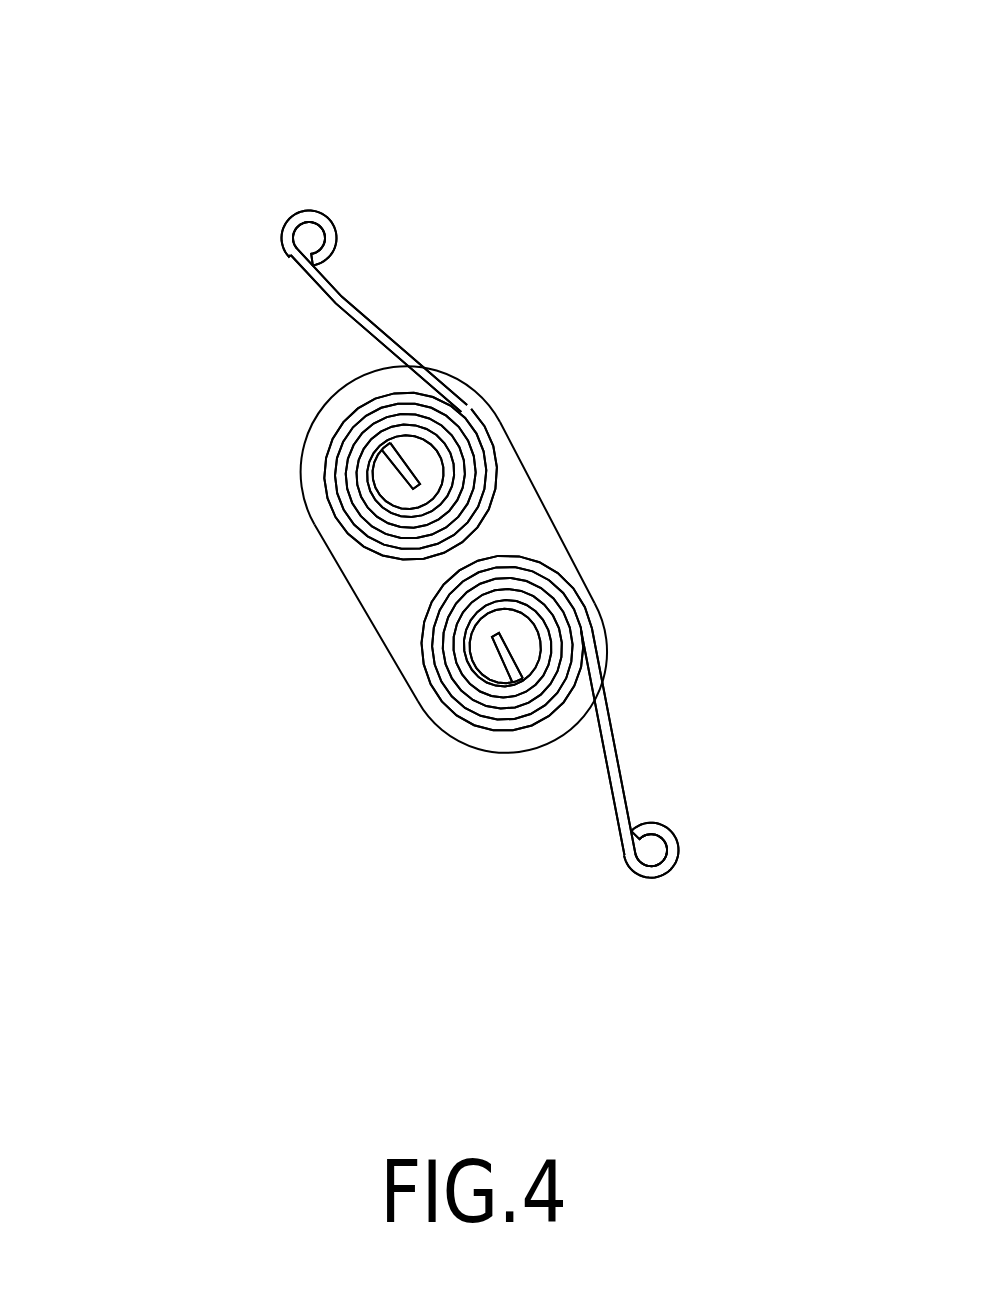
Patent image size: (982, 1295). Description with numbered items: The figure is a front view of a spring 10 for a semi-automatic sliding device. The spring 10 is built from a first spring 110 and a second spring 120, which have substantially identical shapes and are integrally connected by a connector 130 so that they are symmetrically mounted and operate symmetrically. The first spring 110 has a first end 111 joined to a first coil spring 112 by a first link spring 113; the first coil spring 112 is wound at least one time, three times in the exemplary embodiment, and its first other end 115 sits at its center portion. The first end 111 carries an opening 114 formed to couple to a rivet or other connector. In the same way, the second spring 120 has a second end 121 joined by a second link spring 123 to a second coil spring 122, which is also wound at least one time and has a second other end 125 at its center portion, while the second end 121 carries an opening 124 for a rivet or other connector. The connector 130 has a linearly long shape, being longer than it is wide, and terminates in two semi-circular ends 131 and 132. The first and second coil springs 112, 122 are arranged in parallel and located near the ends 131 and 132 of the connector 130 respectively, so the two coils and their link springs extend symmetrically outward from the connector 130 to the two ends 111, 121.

The spring 10 is at (364, 39).
The first spring 110 is at (421, 320).
The first end 111 is at (283, 243).
The first coil spring 112 is at (477, 468).
The first link spring 113 is at (352, 298).
The opening 114 is at (307, 236).
The first other end 115 is at (407, 462).
The second spring 120 is at (636, 713).
The second end 121 is at (634, 868).
The second coil spring 122 is at (527, 588).
The second link spring 123 is at (622, 800).
The opening 124 is at (653, 848).
The second other end 125 is at (510, 653).
The connector 130 is at (350, 627).
The end of connector 131 is at (302, 428).
The end of connector 132 is at (478, 747).